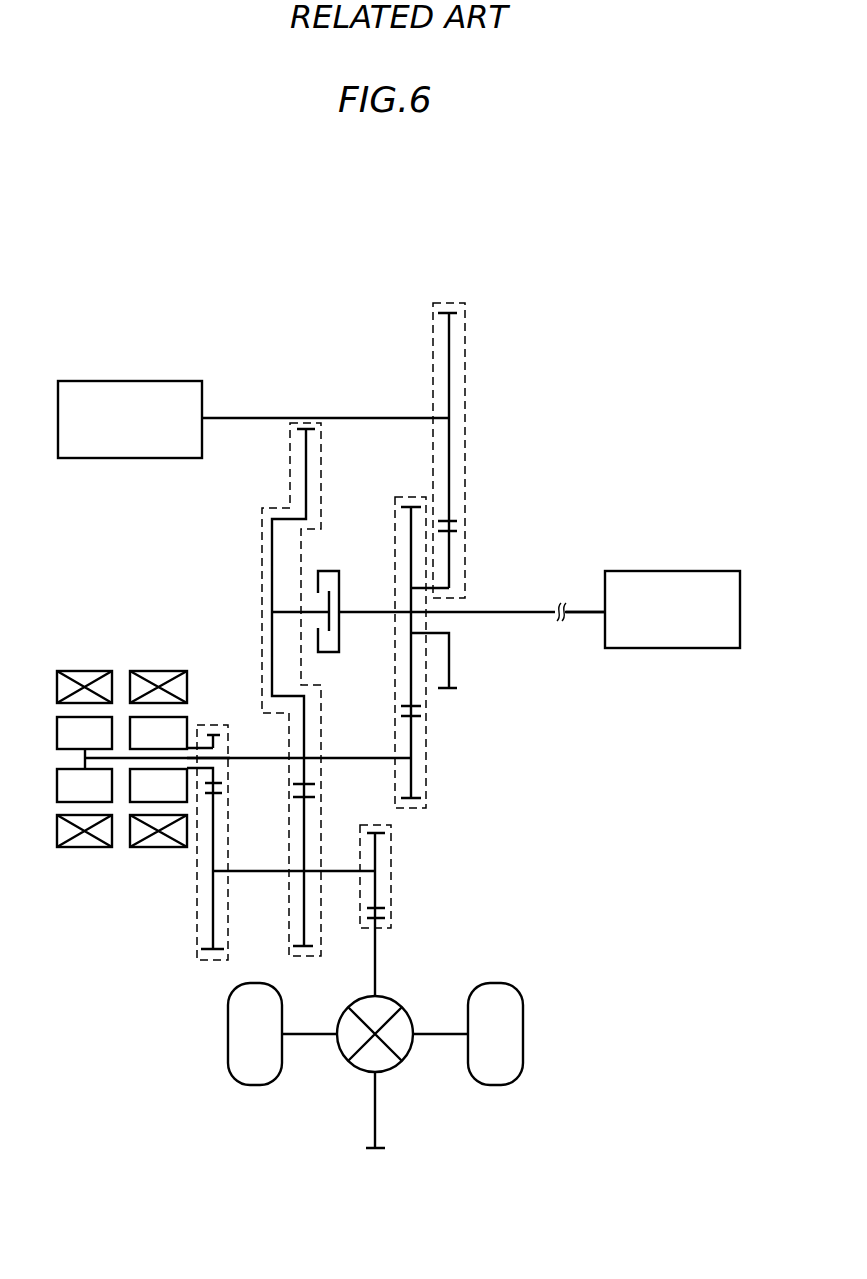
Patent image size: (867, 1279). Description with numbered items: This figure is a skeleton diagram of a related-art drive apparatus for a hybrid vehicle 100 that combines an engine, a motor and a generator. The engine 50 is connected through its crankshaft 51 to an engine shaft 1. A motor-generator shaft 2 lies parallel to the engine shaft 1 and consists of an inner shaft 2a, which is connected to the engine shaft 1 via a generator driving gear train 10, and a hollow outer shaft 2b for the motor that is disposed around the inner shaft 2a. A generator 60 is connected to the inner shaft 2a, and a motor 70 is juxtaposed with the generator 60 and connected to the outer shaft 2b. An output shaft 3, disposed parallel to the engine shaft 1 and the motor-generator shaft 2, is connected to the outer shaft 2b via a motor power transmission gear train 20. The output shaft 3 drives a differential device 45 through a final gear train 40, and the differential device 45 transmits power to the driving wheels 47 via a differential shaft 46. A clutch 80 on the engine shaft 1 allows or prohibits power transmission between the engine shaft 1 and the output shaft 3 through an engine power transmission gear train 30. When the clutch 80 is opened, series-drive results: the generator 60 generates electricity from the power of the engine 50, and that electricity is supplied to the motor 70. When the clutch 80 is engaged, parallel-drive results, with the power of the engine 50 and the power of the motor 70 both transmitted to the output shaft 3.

The hybrid vehicle 100 is at (643, 250).
The engine 50 is at (716, 570).
The engine shaft 1 is at (523, 610).
The crankshaft 51 is at (583, 610).
The clutch 80 is at (331, 567).
The generator driving gear train 10 is at (428, 759).
The engine power transmission gear train 30 is at (321, 935).
The motor-generator shaft 2 is at (338, 757).
The inner shaft 2a is at (258, 762).
The outer shaft 2b is at (221, 748).
The generator 60 is at (75, 668).
The motor 70 is at (152, 668).
The motor power transmission gear train 20 is at (196, 935).
The output shaft 3 is at (338, 870).
The final gear train 40 is at (392, 867).
The differential device 45 is at (352, 1070).
The differential shaft 46 is at (443, 1032).
The driving wheels 47 is at (255, 1087).